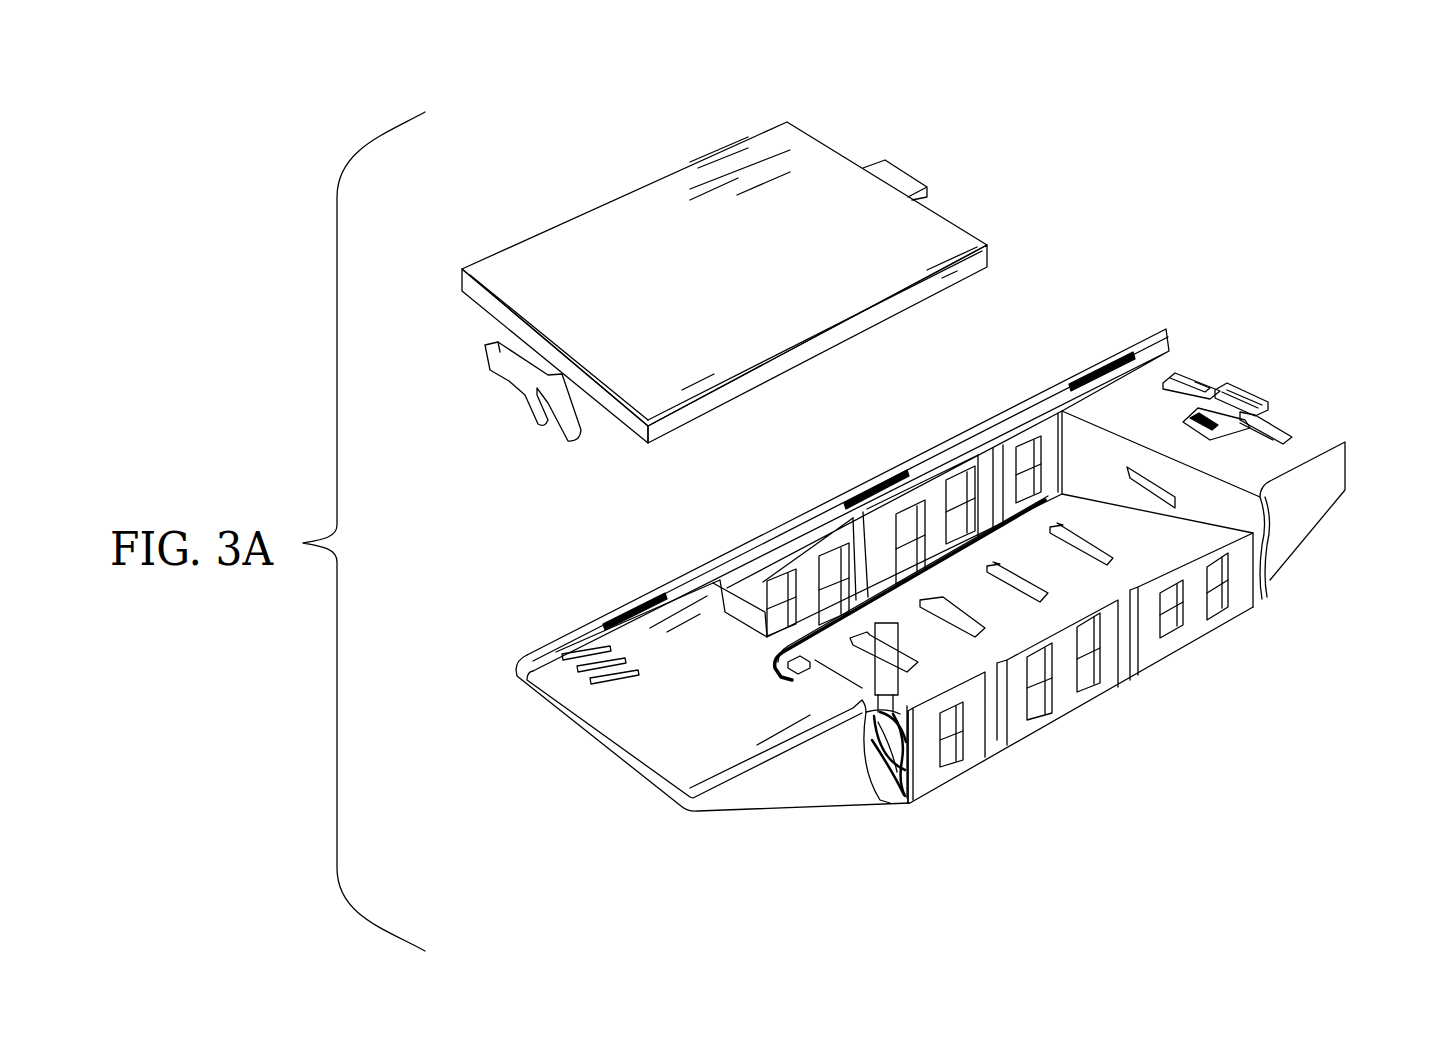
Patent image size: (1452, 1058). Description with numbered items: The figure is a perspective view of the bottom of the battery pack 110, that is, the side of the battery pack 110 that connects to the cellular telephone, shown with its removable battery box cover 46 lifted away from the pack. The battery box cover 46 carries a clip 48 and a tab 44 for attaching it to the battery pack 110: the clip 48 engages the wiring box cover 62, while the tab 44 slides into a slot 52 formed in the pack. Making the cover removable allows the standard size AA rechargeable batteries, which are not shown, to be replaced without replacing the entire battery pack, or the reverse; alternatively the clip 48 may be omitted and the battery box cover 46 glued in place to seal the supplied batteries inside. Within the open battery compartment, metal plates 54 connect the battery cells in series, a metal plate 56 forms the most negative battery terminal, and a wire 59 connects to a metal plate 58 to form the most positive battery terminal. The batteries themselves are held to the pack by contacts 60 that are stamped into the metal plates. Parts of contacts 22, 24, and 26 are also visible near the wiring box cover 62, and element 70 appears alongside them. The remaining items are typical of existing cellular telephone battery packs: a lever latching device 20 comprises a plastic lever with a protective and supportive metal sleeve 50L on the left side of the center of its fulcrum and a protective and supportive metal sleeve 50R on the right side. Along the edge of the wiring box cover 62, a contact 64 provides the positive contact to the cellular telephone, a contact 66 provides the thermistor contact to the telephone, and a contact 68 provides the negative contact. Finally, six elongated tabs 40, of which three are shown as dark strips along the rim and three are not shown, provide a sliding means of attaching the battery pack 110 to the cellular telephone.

The lever latching device 20 is at (1241, 392).
The contact 22 is at (890, 778).
The contact 24 is at (880, 770).
The contact 26 is at (872, 762).
The elongated tabs 40 is at (1114, 355).
The tab 44 is at (909, 167).
The battery box cover 46 is at (640, 222).
The clip 48 is at (498, 394).
The metal sleeve 50L is at (1178, 372).
The metal sleeve 50R is at (1272, 437).
The slot 52 is at (1175, 498).
The metal plates 54 is at (935, 500).
The metal plate 56 is at (928, 770).
The metal plate 58 is at (1003, 468).
The wire 59 is at (1055, 482).
The contacts 60 is at (1033, 430).
The wiring box cover 62 is at (678, 763).
The contact 64 is at (597, 693).
The contact 66 is at (573, 683).
The contact 68 is at (560, 668).
The connector block 70 is at (890, 635).
The battery pack 110 is at (1318, 440).